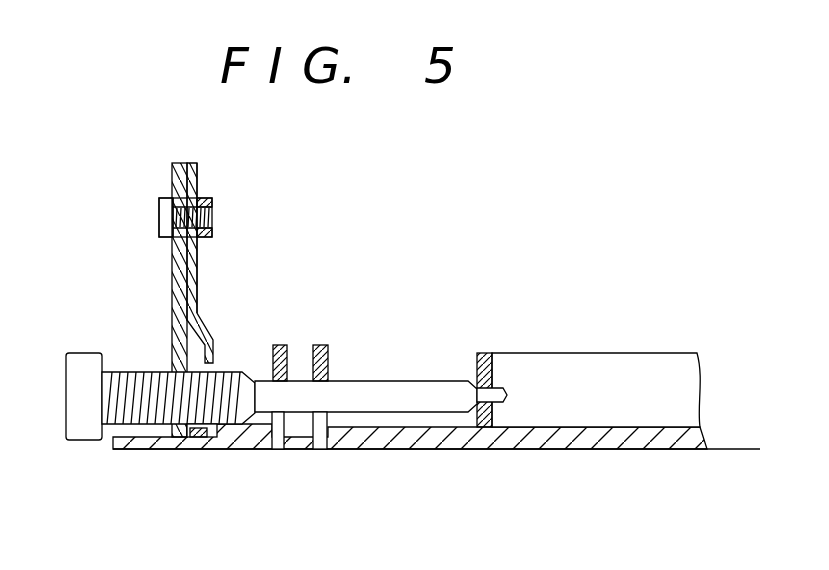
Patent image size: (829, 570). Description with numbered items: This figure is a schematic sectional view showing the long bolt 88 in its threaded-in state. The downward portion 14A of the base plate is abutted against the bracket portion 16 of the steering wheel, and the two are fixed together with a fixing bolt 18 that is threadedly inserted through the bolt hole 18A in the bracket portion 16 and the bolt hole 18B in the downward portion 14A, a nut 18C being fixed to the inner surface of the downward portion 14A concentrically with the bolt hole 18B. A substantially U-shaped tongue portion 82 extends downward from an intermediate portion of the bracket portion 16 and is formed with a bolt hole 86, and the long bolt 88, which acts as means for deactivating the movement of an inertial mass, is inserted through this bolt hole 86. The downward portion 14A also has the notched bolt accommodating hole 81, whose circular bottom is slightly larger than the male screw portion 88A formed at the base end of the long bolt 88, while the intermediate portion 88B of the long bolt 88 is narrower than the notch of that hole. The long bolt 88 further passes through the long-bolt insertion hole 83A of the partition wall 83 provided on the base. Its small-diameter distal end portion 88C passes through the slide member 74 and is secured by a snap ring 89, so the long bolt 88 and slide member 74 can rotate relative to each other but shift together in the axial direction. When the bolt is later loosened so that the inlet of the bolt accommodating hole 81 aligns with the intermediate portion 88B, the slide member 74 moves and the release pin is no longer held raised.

The downward portion 14A is at (198, 272).
The bracket portion 16 is at (169, 256).
The fixing bolt 18 is at (162, 212).
The bolt hole 18A is at (170, 201).
The bolt hole 18B is at (200, 198).
The nut 18C is at (212, 233).
The slide member 74 is at (644, 352).
The bolt accommodating hole 81 is at (211, 438).
The tongue portion 82 is at (172, 282).
The partition wall 83 is at (320, 344).
The long-bolt insertion hole 83A is at (346, 362).
The bolt hole 86 is at (173, 362).
The long bolt 88 is at (138, 428).
The male screw portion 88A is at (118, 365).
The intermediate portion 88B is at (398, 380).
The distal end portion 88C is at (507, 393).
The snap ring 89 is at (490, 382).